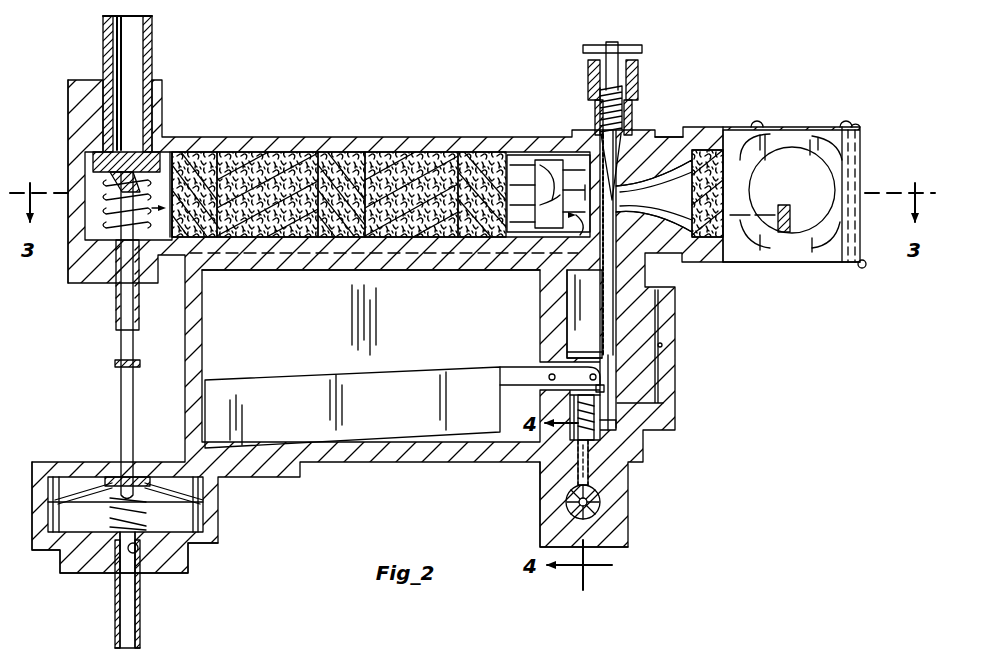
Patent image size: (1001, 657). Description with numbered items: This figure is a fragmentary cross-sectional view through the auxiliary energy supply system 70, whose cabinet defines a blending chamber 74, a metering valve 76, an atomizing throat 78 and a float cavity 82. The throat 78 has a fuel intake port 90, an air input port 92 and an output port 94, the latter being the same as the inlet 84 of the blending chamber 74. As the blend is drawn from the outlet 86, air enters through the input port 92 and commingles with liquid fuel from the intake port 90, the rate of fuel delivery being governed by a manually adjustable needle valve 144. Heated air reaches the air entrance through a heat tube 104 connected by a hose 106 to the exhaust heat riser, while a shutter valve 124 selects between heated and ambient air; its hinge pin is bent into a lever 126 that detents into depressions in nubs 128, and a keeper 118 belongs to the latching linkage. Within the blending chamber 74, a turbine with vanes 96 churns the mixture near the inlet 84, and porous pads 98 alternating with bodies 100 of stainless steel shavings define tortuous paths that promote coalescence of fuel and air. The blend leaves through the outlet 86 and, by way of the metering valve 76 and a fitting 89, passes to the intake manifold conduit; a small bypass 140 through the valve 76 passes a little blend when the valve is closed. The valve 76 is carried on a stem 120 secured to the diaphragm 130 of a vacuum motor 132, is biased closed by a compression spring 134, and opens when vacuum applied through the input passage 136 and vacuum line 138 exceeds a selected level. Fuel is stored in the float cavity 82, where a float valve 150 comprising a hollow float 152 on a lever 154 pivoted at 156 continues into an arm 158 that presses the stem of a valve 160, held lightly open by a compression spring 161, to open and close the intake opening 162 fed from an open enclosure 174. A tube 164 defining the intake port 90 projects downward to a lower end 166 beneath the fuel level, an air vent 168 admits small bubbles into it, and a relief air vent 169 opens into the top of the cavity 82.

The auxiliary energy supply system 70 is at (660, 82).
The blending chamber 74 is at (425, 274).
The metering valve 76 is at (95, 166).
The atomizing throat 78 is at (676, 160).
The float cavity 82 is at (270, 272).
The inlet 84 is at (572, 278).
The outlet 86 is at (142, 282).
The fitting 89 is at (153, 60).
The fuel intake port 90 is at (654, 196).
The air input port 92 is at (708, 240).
The output port 94 is at (580, 172).
The vanes 96 is at (553, 160).
The pads 98 is at (216, 152).
The body of shavings 100 is at (270, 155).
The heat tube 104 is at (770, 262).
The hose 106 is at (740, 170).
The keeper 118 is at (115, 363).
The stem 120 is at (134, 426).
The shutter valve 124 is at (862, 268).
The lever 126 is at (847, 120).
The nubs 128 is at (760, 127).
The diaphragm 130 is at (92, 478).
The vacuum motor 132 is at (220, 536).
The compression spring 134 is at (68, 262).
The input passage 136 is at (140, 560).
The vacuum line 138 is at (141, 628).
The bypass 140 is at (170, 152).
The needle valve 144 is at (628, 150).
The float valve 150 is at (430, 363).
The hollow float 152 is at (274, 380).
The lever 154 is at (520, 365).
The pivot 156 is at (550, 381).
The arm 158 is at (606, 387).
The valve 160 is at (600, 414).
The compression spring 161 is at (541, 470).
The intake opening 162 is at (598, 480).
The tube 164 is at (610, 290).
The lower end 166 is at (614, 426).
The air vent 168 is at (662, 335).
The relief air vent 169 is at (350, 278).
The open enclosure 174 is at (600, 505).